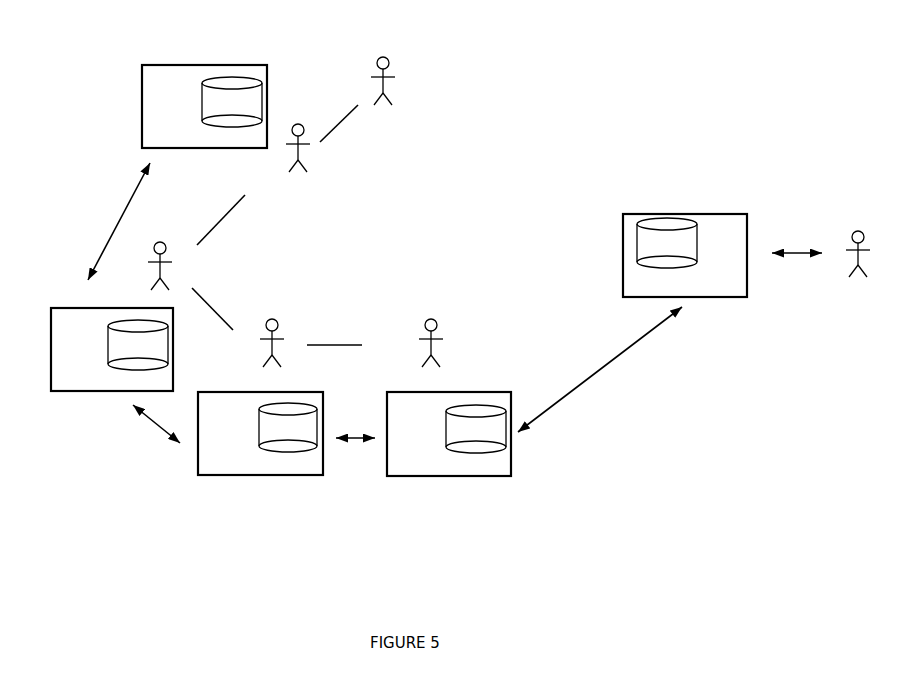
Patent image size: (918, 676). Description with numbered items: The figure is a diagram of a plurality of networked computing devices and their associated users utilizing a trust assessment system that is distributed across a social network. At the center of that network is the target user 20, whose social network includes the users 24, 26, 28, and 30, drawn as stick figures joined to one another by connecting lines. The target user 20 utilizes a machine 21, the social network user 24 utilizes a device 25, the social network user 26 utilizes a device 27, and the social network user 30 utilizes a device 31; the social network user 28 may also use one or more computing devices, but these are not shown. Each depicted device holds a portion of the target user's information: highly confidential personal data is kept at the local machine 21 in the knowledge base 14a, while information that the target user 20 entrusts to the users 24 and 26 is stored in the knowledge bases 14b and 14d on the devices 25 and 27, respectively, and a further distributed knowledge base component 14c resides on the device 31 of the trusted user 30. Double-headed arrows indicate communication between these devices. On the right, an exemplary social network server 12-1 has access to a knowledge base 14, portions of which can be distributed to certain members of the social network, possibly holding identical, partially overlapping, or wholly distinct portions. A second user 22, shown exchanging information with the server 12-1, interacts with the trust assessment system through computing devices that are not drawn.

The device 27 is at (142, 65).
The knowledge base 14d is at (202, 97).
The social network user 28 is at (394, 59).
The social network user 26 is at (310, 171).
The target user 20 is at (165, 242).
The social network user 24 is at (279, 318).
The social network user 30 is at (431, 318).
The machine 21 is at (50, 392).
The knowledge base 14a is at (106, 343).
The device 25 is at (198, 475).
The knowledge base 14b is at (259, 428).
The device 31 is at (492, 477).
The distributed knowledge base component 14c is at (446, 436).
The social network server 12-1 is at (623, 214).
The knowledge base 14 is at (697, 248).
The second user 22 is at (852, 229).